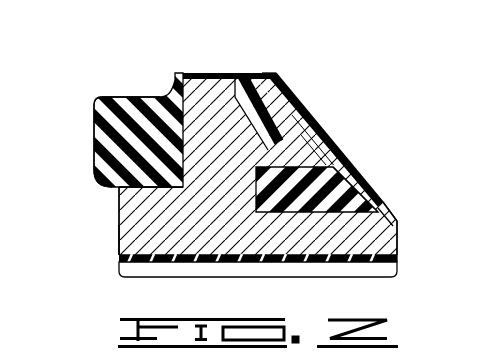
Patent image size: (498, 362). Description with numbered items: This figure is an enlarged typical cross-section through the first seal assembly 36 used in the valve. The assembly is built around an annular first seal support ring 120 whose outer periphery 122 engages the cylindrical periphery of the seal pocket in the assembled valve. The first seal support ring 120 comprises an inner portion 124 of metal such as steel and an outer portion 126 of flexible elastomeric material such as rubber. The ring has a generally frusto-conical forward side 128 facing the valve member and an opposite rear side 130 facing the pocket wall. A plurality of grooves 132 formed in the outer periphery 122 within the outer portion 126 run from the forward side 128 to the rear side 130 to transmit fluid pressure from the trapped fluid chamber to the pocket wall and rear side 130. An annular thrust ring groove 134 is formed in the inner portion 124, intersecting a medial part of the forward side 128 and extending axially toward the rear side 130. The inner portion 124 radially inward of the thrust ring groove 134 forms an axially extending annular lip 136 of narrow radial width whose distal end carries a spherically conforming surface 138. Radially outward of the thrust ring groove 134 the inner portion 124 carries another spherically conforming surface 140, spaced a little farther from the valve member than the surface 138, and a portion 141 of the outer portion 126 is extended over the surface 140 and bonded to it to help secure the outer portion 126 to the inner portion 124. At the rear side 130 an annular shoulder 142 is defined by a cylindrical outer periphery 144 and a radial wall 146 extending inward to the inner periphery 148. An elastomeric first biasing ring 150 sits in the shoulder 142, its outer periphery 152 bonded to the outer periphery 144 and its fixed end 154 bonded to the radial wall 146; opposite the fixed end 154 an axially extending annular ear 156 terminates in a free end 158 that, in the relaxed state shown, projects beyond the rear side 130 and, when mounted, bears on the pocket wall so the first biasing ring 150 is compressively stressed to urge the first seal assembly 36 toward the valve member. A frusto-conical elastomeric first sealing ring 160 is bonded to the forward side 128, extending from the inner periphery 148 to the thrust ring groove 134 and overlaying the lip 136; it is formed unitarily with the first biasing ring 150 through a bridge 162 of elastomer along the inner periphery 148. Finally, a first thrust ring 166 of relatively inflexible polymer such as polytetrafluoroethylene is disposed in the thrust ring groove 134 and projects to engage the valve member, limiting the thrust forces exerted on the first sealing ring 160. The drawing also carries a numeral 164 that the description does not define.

The first seal assembly 36 is at (312, 97).
The first seal support ring 120 is at (165, 235).
The outer periphery 122 is at (252, 277).
The inner portion 124 is at (186, 86).
The outer portion 126 is at (393, 268).
The forward side 128 is at (317, 129).
The rear side 130 is at (119, 196).
The grooves 132 is at (323, 264).
The thrust ring groove 134 is at (358, 198).
The lip 136 is at (338, 162).
The surface 138 is at (332, 148).
The surface 140 is at (385, 210).
The portion 141 is at (396, 222).
The shoulder 142 is at (119, 242).
The outer periphery 144 is at (110, 174).
The radial wall 146 is at (183, 143).
The inner periphery 148 is at (213, 76).
The first biasing ring 150 is at (128, 95).
The outer periphery 152 is at (157, 193).
The fixed end 154 is at (225, 76).
The ear 156 is at (107, 110).
The free end 158 is at (93, 125).
The first sealing ring 160 is at (275, 74).
The bridge 162 is at (192, 76).
The gap layer 164 is at (308, 116).
The first thrust ring 166 is at (340, 190).